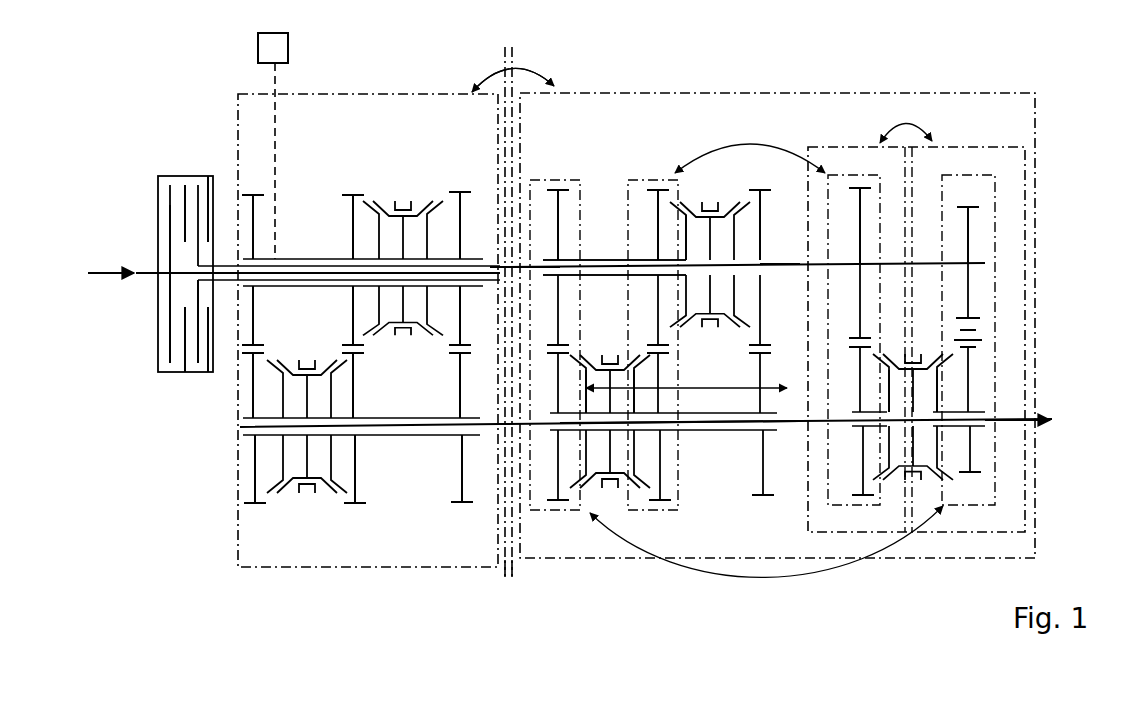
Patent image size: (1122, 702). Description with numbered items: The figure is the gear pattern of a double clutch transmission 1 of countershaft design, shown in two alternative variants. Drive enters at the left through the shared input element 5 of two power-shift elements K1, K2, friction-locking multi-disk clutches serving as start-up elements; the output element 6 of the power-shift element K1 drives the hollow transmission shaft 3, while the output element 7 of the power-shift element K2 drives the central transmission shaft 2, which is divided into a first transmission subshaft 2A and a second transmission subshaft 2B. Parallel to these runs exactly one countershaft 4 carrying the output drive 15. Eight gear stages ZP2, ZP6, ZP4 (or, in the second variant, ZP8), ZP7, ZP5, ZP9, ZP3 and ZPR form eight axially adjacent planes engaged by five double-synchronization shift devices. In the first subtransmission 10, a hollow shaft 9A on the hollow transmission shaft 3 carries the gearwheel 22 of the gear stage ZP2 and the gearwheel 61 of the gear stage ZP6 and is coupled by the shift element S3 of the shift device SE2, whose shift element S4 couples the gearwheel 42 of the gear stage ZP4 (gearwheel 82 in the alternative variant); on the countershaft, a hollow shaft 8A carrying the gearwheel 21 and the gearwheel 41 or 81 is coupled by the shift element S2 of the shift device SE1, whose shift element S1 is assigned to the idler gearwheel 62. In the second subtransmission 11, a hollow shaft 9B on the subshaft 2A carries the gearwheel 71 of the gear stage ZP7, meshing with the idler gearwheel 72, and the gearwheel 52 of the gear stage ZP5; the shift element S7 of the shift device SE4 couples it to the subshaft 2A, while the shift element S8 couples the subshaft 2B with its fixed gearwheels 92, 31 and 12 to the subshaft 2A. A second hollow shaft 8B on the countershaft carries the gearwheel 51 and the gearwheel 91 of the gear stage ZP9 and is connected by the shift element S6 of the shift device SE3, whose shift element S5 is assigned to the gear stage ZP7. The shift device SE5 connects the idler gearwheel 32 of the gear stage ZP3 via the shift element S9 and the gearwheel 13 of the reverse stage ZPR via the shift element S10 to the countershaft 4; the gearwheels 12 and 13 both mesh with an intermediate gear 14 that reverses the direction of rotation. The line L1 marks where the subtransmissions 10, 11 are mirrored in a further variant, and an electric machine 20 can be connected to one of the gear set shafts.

The double clutch transmission 1 is at (146, 107).
The electric machine 20 is at (258, 45).
The hollow transmission shaft 3 is at (223, 264).
The input element 5 is at (173, 176).
The output element 6 is at (193, 197).
The output element 7 is at (170, 205).
The power-shift element K1 is at (199, 378).
The power-shift element K2 is at (171, 378).
The hollow shaft 9A is at (297, 262).
The hollow shaft 9B is at (590, 262).
The central transmission shaft 2 is at (792, 256).
The first transmission subshaft 2A is at (499, 263).
The second transmission subshaft 2B is at (783, 270).
The first subtransmission 10 is at (357, 93).
The second subtransmission 11 is at (650, 93).
The line L1 is at (512, 47).
The countershaft 4 is at (505, 570).
The hollow shaft 8A is at (397, 440).
The second hollow shaft 8B is at (709, 432).
The output drive 15 is at (1040, 420).
The gearwheel 61 is at (250, 197).
The gearwheel 22 is at (350, 212).
The shift element S3 is at (354, 194).
The shift device SE2 is at (404, 192).
The shift element S4 is at (458, 185).
The gearwheel 42 is at (471, 258).
The gear 82 is at (471, 273).
The gear stage ZP4 is at (503, 66).
The gear stage ZP8 is at (504, 62).
The shift device SE1 is at (306, 358).
The shift element S1 is at (283, 495).
The shift element S2 is at (340, 495).
The gearwheel 62 is at (262, 481).
The gearwheel 21 is at (403, 385).
The gear stage ZP6 is at (256, 509).
The gear stage ZP2 is at (354, 512).
The gearwheel 41 is at (461, 498).
The gear 81 is at (442, 500).
The gearwheel 71 is at (556, 215).
The gear stage ZP7 is at (559, 182).
The gearwheel 72 is at (557, 500).
The gearwheel 52 is at (650, 212).
The gear stage ZP5 is at (658, 181).
The gearwheel 51 is at (662, 500).
The shift device SE4 is at (711, 194).
The shift element S7 is at (686, 203).
The shift element S8 is at (735, 203).
The gear stage ZP9 is at (759, 181).
The gearwheel 92 is at (760, 172).
The gearwheel 91 is at (763, 475).
The shift device SE3 is at (613, 498).
The shift element S5 is at (586, 493).
The shift element S6 is at (636, 493).
The gearwheel 31 is at (859, 207).
The gear stage ZP3 is at (860, 180).
The gearwheel 32 is at (862, 477).
The gearwheel 12 is at (968, 228).
The gear stage ZPR is at (970, 199).
The intermediate gear 14 is at (983, 322).
The gearwheel 13 is at (973, 462).
The shift device SE5 is at (916, 491).
The shift element S9 is at (882, 483).
The shift element S10 is at (940, 483).